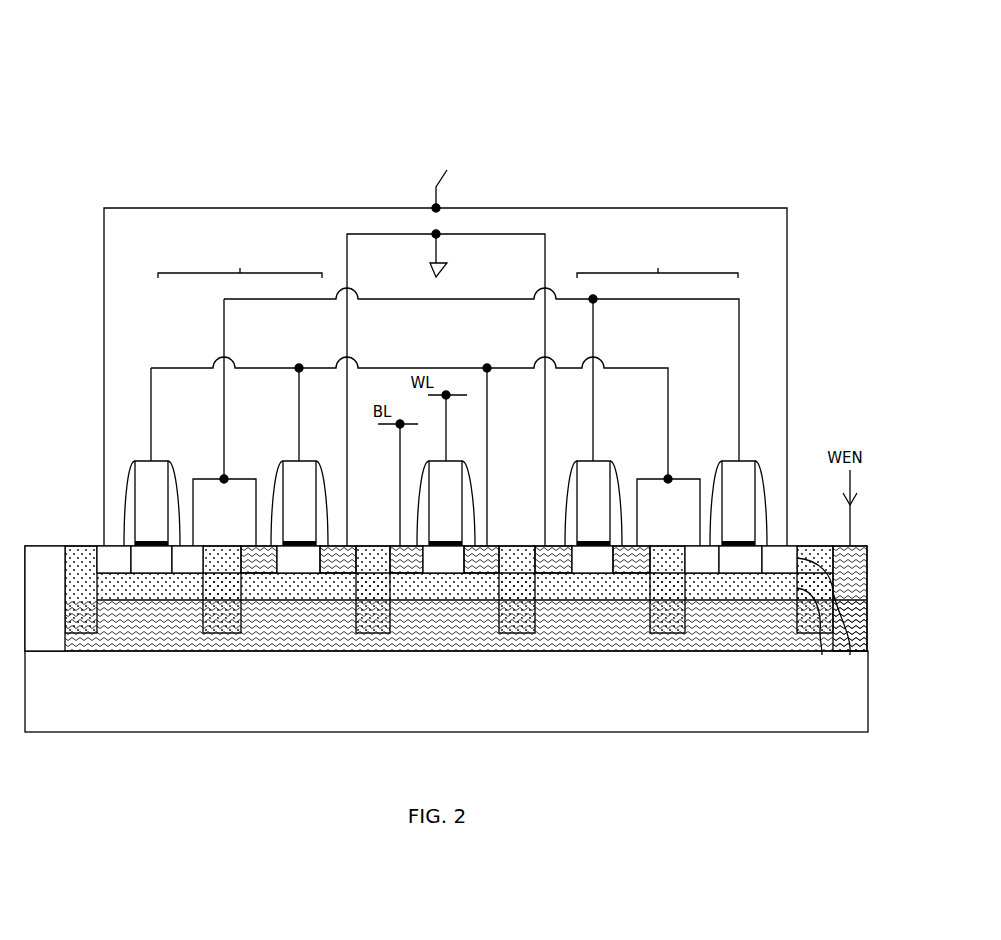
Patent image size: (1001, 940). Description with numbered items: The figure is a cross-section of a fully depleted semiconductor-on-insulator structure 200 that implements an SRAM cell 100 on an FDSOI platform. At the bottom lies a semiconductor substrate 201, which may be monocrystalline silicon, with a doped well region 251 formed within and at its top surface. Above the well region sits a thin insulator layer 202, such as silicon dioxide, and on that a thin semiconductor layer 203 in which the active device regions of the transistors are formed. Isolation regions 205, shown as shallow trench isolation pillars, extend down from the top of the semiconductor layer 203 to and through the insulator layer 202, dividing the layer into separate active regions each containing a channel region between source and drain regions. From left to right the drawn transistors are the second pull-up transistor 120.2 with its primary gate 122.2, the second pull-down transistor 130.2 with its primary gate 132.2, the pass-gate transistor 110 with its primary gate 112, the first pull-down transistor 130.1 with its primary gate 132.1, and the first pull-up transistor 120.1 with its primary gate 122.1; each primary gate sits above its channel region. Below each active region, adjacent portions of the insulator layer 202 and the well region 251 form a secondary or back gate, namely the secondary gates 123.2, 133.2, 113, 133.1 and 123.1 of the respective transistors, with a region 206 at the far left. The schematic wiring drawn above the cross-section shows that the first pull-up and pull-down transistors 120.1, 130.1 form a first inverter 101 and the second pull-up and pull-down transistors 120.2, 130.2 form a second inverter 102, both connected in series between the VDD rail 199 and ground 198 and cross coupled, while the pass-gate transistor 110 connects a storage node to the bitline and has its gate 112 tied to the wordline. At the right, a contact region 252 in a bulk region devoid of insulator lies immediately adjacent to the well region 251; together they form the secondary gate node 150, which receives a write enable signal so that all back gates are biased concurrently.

The fully depleted semiconductor-on-insulator structure 200 is at (91, 84).
The SRAM cell 100 is at (76, 296).
The VDD rail 199 is at (428, 187).
The ground 198 is at (428, 268).
The second inverter 102 is at (240, 259).
The first inverter 101 is at (657, 258).
The primary gate of second pull-up transistor 122.2 is at (135, 460).
The second pull-up transistor 120.2 is at (176, 444).
The second pull-down transistor 130.2 is at (274, 443).
The primary gate of second pull-down transistor 132.2 is at (314, 460).
The primary gate of pass-gate transistor 112 is at (456, 460).
The pass-gate transistor 110 is at (508, 456).
The first pull-down transistor 130.1 is at (575, 443).
The primary gate of first pull-down transistor 132.1 is at (608, 460).
The first pull-up transistor 120.1 is at (711, 432).
The primary gate of first pull-up transistor 122.1 is at (749, 460).
The contact region 252 is at (867, 574).
The well region 251 is at (867, 633).
The secondary gate node 150 is at (905, 546).
The secondary gate of second pull-up transistor 123.2 is at (92, 659).
The isolation regions 205 is at (219, 633).
The secondary gate of second pull-down transistor 133.2 is at (243, 659).
The secondary gate of pass-gate transistor 113 is at (392, 659).
The secondary gate of first pull-down transistor 133.1 is at (540, 659).
The secondary gate of first pull-up transistor 123.1 is at (686, 659).
The insulator layer 202 is at (812, 635).
The semiconductor layer 203 is at (829, 618).
The isolation region 206 is at (32, 602).
The semiconductor substrate 201 is at (830, 723).